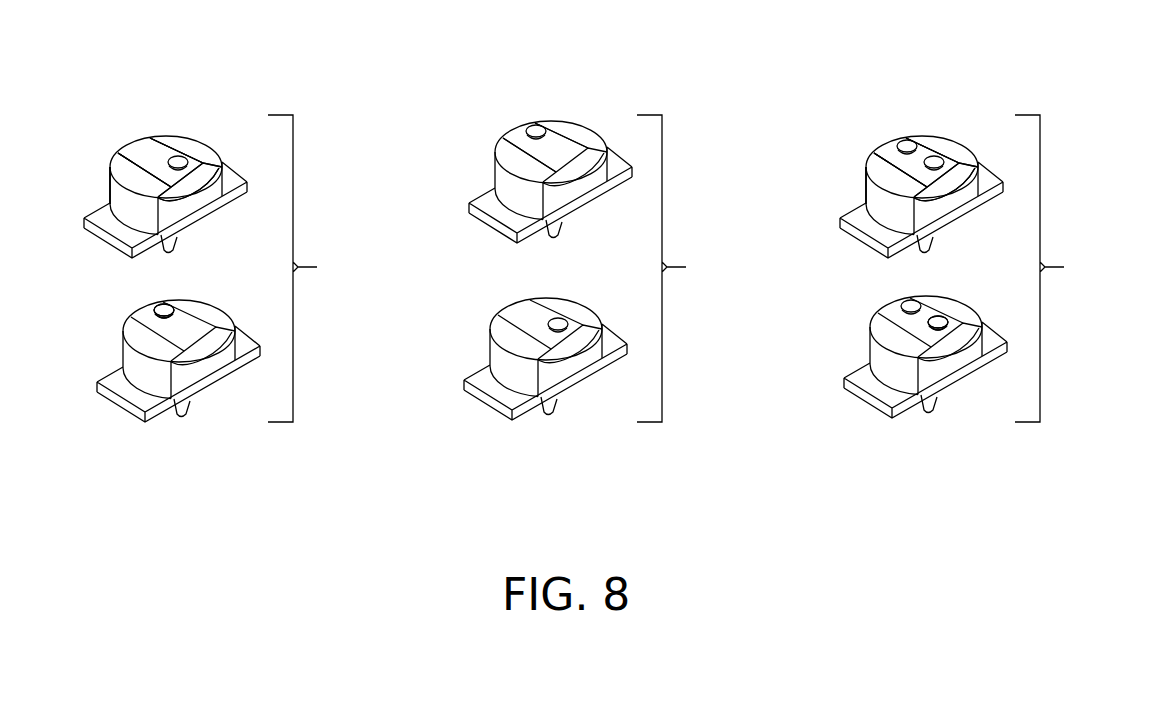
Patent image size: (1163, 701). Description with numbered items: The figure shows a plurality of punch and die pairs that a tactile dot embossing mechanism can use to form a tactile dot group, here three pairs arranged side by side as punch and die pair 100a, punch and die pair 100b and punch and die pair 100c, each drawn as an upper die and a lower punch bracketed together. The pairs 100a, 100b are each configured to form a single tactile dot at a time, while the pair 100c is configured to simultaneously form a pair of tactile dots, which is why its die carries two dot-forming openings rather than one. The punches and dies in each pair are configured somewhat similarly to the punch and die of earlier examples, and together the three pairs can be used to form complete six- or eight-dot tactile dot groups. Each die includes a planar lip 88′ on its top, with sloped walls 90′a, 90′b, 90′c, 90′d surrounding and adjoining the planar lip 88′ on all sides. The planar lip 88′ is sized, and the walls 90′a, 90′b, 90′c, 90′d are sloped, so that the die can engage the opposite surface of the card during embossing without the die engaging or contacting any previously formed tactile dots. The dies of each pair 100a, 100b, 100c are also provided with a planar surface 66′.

The planar lip 88′ is at (925, 157).
The sloped wall 90′a is at (883, 178).
The sloped wall 90′b is at (943, 187).
The sloped wall 90′c is at (965, 155).
The sloped wall 90′d is at (875, 157).
The planar surface 66′ is at (930, 317).
The punch and die pair 100a is at (237, 268).
The punch and die pair 100b is at (612, 268).
The punch and die pair 100c is at (988, 268).